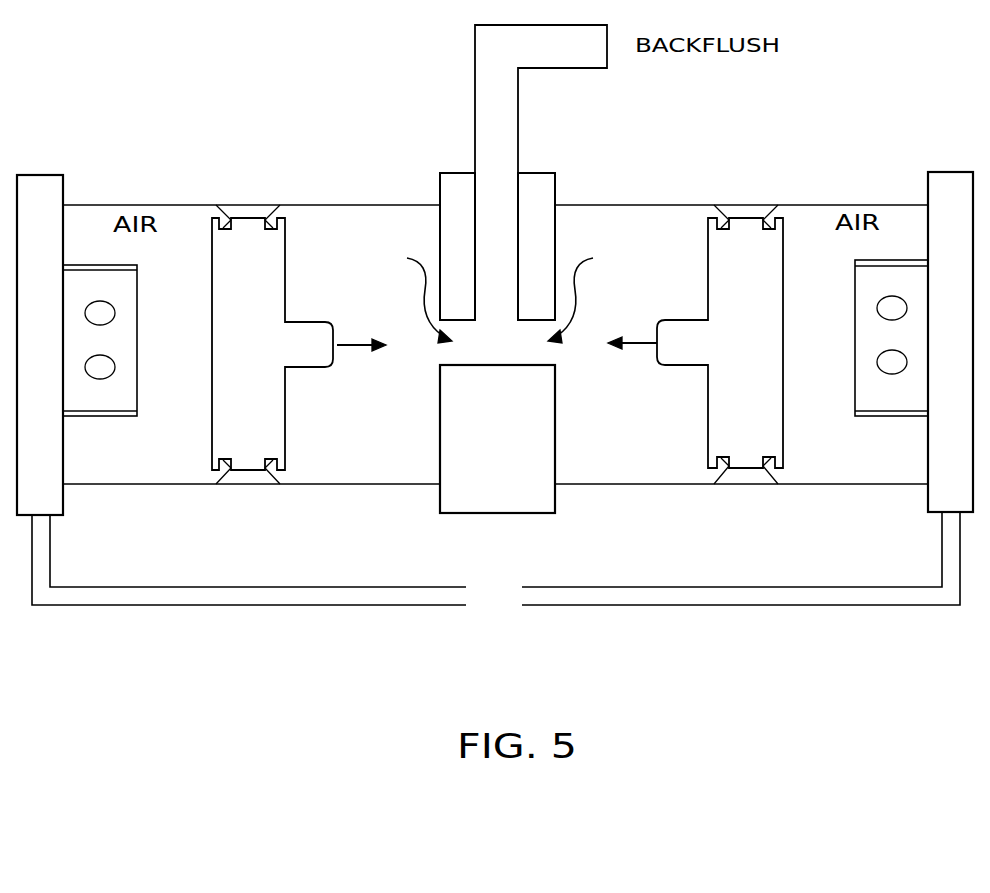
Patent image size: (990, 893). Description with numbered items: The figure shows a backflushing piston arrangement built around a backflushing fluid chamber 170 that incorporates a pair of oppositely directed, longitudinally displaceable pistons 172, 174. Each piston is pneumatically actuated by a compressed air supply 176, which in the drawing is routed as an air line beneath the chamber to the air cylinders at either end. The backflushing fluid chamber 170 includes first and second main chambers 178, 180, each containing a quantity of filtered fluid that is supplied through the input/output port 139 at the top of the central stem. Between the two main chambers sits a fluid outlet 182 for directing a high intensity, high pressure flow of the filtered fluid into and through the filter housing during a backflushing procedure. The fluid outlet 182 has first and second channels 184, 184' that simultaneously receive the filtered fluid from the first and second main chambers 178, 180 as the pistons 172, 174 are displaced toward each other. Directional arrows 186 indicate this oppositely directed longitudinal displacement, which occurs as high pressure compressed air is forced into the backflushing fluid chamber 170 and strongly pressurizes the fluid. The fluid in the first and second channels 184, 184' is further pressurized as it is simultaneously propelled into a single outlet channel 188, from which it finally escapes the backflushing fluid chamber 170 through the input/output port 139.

The input/output port 139 is at (522, 125).
The backflushing fluid chamber 170 is at (141, 205).
The piston 172 is at (270, 246).
The piston 174 is at (708, 242).
The compressed air supply 176 is at (605, 595).
The first main chamber 178 is at (382, 432).
The second main chamber 180 is at (651, 434).
The fluid outlet 182 is at (556, 186).
The first channel 184 is at (406, 292).
The second channel 184' is at (593, 288).
The directional arrows 186 is at (337, 345).
The single outlet channel 188 is at (496, 118).